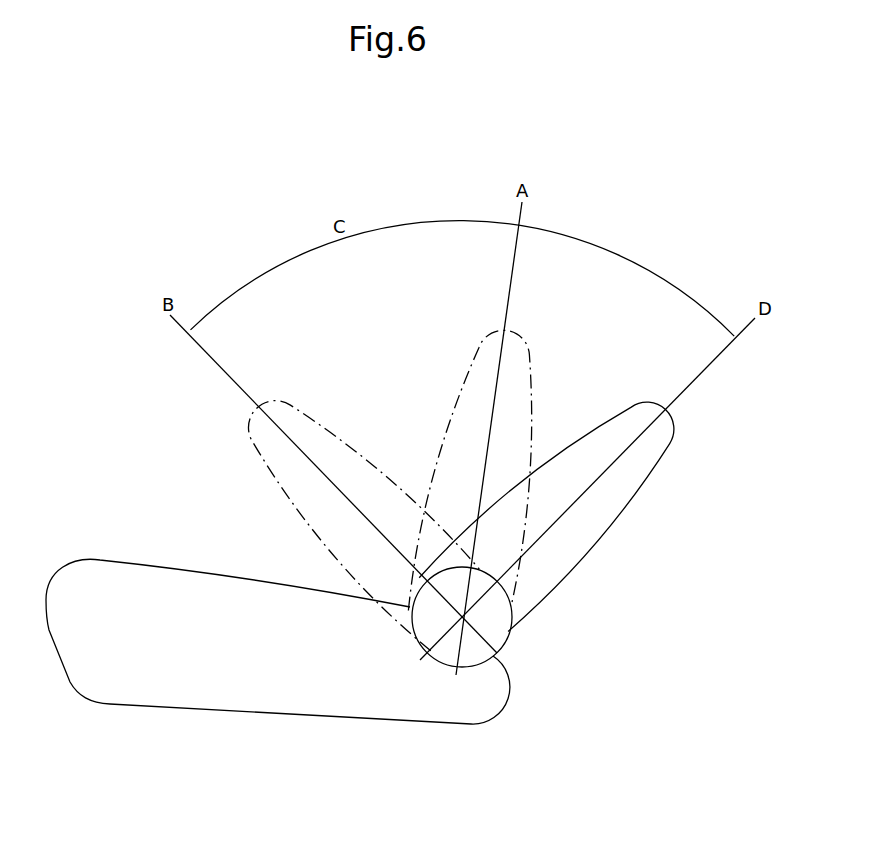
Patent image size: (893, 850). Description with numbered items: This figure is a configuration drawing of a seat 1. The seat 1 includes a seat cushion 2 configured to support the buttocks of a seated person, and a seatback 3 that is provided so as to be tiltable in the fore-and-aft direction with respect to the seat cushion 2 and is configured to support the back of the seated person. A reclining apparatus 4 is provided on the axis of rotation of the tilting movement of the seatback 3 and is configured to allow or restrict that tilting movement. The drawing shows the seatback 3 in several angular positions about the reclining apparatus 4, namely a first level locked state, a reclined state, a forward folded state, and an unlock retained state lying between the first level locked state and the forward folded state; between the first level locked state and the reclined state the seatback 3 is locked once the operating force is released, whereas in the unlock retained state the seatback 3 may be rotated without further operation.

The seat 1 is at (399, 542).
The seat cushion 2 is at (213, 693).
The seatback 3 is at (590, 525).
The reclining apparatus 4 is at (495, 622).